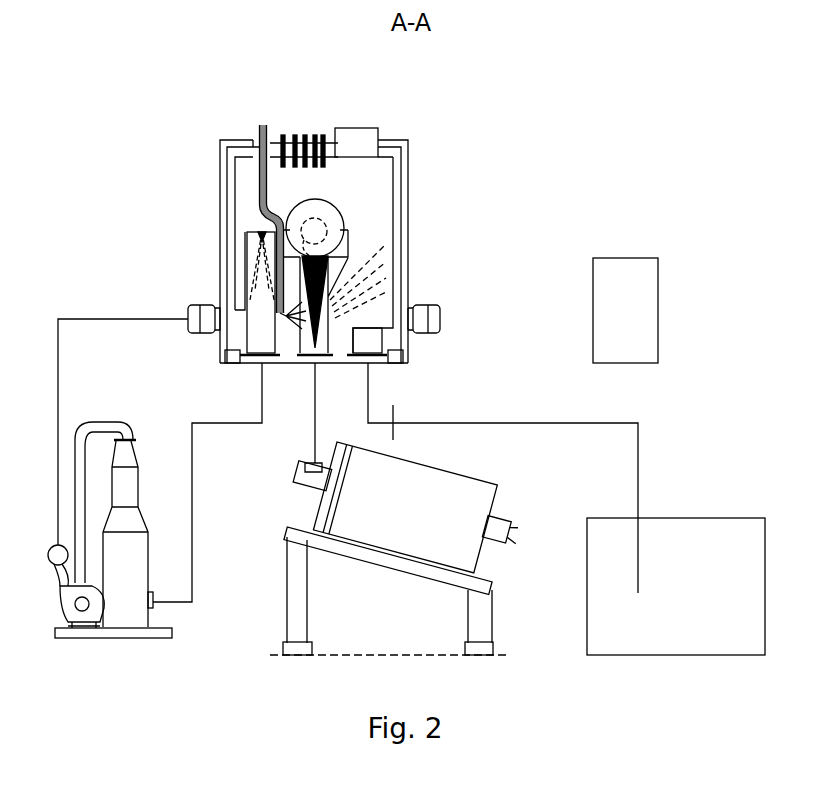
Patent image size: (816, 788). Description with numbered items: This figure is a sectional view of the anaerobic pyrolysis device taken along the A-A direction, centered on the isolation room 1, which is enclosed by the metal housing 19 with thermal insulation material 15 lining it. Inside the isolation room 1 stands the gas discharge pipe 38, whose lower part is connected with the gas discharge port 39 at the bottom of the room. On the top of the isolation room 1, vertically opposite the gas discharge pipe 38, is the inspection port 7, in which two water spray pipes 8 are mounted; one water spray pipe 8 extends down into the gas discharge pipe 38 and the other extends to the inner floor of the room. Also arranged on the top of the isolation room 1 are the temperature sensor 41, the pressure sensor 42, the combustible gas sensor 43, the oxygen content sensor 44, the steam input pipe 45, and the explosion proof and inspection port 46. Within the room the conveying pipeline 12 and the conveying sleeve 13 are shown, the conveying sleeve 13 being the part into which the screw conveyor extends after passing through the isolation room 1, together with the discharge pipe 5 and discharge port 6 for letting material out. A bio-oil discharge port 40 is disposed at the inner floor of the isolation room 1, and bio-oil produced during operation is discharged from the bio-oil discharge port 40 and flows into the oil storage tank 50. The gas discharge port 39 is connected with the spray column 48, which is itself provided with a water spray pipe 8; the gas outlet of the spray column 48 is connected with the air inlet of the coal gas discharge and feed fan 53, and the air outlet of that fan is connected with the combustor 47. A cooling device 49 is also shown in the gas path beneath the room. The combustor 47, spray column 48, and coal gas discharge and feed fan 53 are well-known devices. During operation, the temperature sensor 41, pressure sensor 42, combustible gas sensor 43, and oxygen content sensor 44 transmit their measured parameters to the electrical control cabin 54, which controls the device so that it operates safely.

The isolation room 1 is at (345, 251).
The discharge pipe 5 is at (338, 256).
The discharge port 6 is at (318, 357).
The inspection port 7 is at (256, 140).
The water spray pipe 8 is at (262, 124).
The conveying pipeline 12 is at (308, 207).
The conveying sleeve 13 is at (322, 222).
The thermal insulation material 15 is at (400, 228).
The metal housing 19 is at (405, 272).
The gas discharge pipe 38 is at (260, 292).
The gas discharge port 39 is at (264, 360).
The bio-oil discharge port 40 is at (370, 357).
The temperature sensor 41 is at (284, 135).
The pressure sensor 42 is at (295, 135).
The combustible gas sensor 43 is at (305, 135).
The oxygen content sensor 44 is at (316, 135).
The steam input pipe 45 is at (324, 135).
The explosion proof and inspection port 46 is at (360, 132).
The combustor 47 is at (200, 318).
The spray column 48 is at (127, 490).
The cooling device 49 is at (447, 492).
The oil storage tank 50 is at (698, 533).
The coal gas discharge and feed fan 53 is at (84, 597).
The electrical control cabin 54 is at (625, 278).